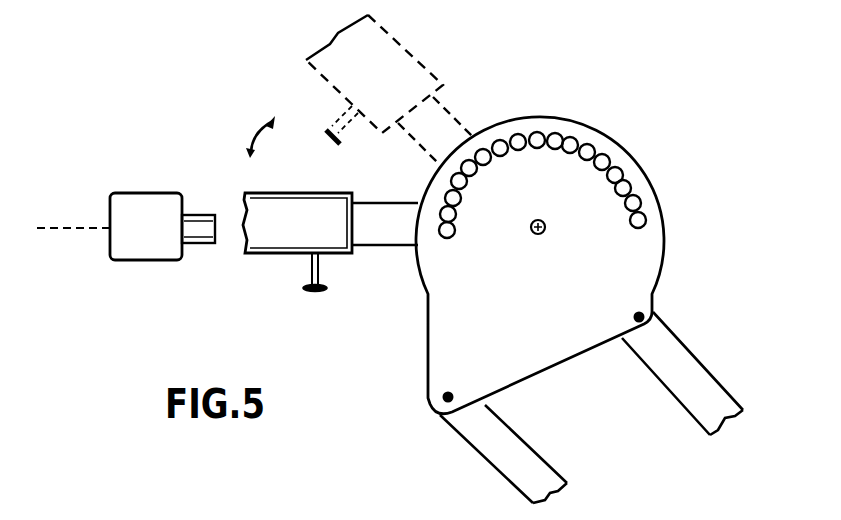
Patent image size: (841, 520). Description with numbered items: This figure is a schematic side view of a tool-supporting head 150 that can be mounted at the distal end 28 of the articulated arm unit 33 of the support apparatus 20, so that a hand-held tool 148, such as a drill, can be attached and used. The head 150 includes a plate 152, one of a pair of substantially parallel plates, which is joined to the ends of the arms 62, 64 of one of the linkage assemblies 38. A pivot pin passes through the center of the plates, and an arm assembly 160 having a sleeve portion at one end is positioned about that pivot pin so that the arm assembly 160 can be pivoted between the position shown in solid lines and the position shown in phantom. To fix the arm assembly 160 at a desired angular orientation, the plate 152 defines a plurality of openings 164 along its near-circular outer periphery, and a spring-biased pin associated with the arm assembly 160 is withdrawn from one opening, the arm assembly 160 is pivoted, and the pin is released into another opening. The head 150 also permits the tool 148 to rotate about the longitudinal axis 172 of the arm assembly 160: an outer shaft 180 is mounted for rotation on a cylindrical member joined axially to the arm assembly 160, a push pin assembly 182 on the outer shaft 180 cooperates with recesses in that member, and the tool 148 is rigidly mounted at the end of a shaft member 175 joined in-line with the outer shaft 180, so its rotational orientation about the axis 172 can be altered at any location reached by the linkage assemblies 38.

The support apparatus 20 is at (647, 116).
The distal end 28 is at (660, 324).
The articulated arm unit 33 is at (768, 192).
The linkage assembly 38 is at (728, 388).
The arm 62 is at (703, 362).
The arm 64 is at (488, 463).
The tool 148 is at (135, 260).
The head 150 is at (625, 116).
The plate 152 is at (667, 212).
The arm assembly 160 is at (382, 248).
The openings 164 is at (558, 133).
The longitudinal axis 172 is at (53, 230).
The shaft member 175 is at (205, 215).
The outer shaft 180 is at (255, 257).
The push pin assembly 182 is at (305, 263).